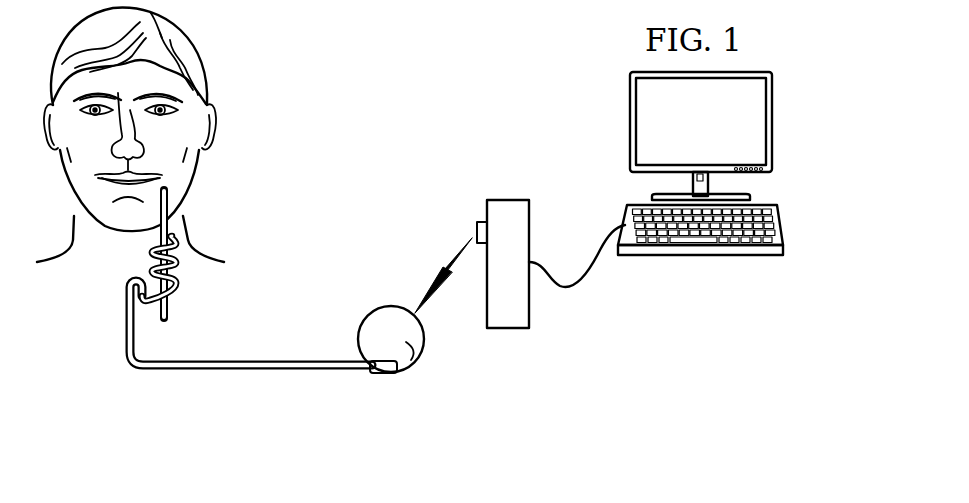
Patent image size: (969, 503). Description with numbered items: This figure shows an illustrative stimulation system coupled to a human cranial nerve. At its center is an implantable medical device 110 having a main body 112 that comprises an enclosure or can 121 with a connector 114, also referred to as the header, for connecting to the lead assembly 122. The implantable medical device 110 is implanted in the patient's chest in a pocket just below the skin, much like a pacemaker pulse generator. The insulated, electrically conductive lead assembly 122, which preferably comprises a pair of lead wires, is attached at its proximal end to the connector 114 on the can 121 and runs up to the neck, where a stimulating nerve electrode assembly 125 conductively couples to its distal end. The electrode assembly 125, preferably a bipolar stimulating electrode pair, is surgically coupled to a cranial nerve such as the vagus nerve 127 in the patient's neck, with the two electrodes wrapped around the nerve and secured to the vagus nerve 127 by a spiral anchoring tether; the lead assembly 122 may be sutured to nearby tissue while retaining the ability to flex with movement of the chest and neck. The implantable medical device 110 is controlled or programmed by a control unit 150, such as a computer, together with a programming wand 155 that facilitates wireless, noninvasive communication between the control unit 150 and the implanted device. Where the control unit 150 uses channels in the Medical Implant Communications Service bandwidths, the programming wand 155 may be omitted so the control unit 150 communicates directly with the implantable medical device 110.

The implantable medical device 110 is at (340, 312).
The main body 112 is at (414, 350).
The connector 114 is at (380, 373).
The can 121 is at (392, 306).
The lead assembly 122 is at (125, 310).
The electrode assembly 125 is at (132, 257).
The vagus nerve 127 is at (170, 222).
The control unit 150 is at (700, 256).
The programming wand 155 is at (508, 329).